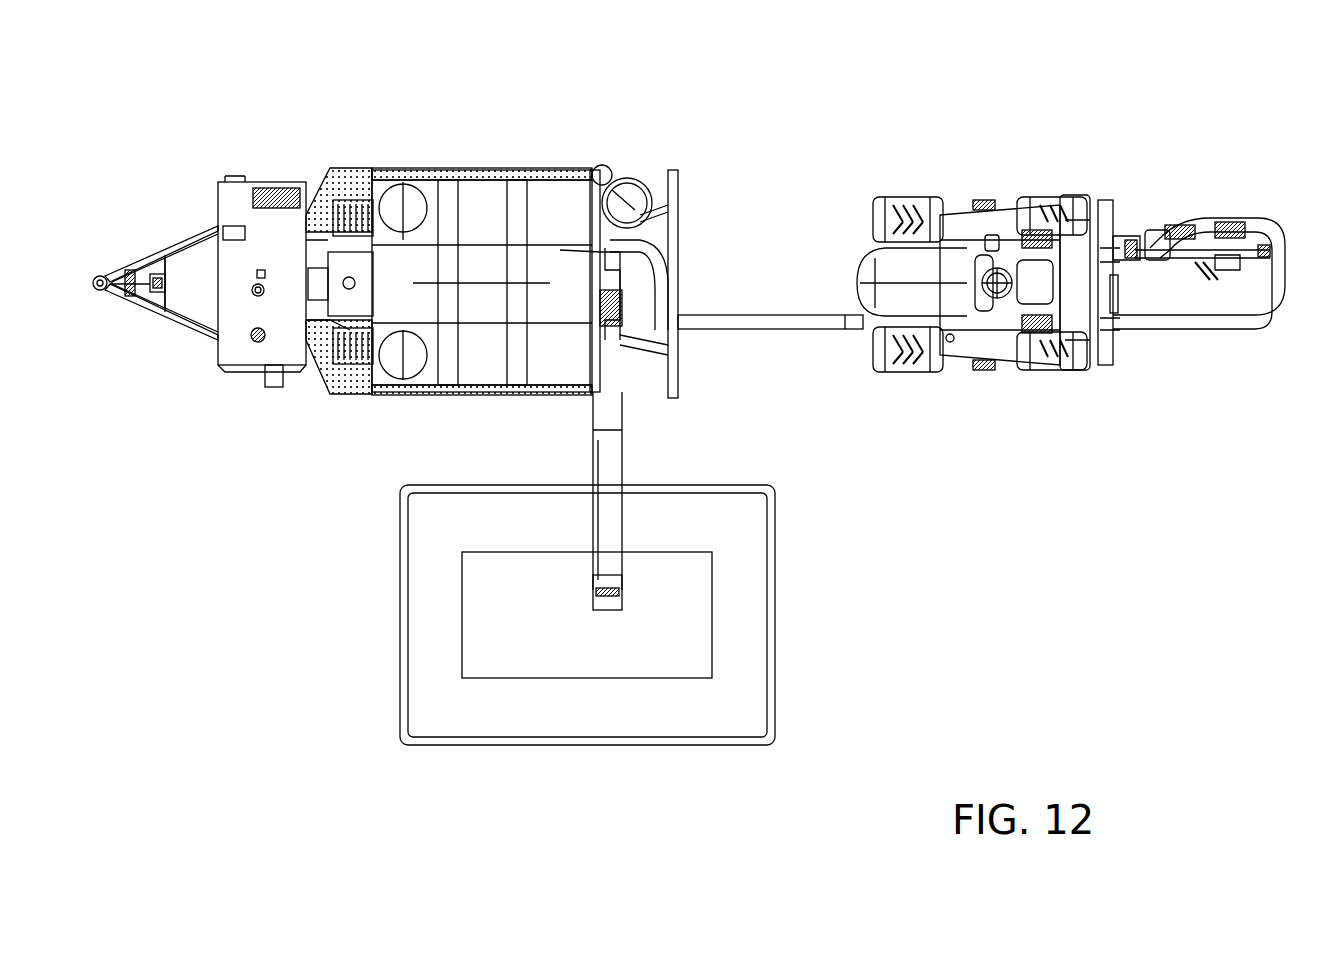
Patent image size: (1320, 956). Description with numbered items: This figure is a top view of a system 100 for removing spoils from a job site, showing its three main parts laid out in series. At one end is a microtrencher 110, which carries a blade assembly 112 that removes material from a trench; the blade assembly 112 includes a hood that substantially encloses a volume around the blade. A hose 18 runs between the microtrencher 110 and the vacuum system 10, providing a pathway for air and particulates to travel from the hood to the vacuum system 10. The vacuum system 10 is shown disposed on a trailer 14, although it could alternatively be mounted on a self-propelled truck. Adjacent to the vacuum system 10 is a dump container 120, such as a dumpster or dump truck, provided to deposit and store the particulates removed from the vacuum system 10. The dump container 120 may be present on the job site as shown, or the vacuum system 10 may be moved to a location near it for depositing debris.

The system 100 is at (787, 90).
The vacuum system 10 is at (495, 172).
The trailer 14 is at (186, 242).
The hose 18 is at (778, 313).
The microtrencher 110 is at (1036, 200).
The blade assembly 112 is at (1216, 214).
The dump container 120 is at (775, 578).